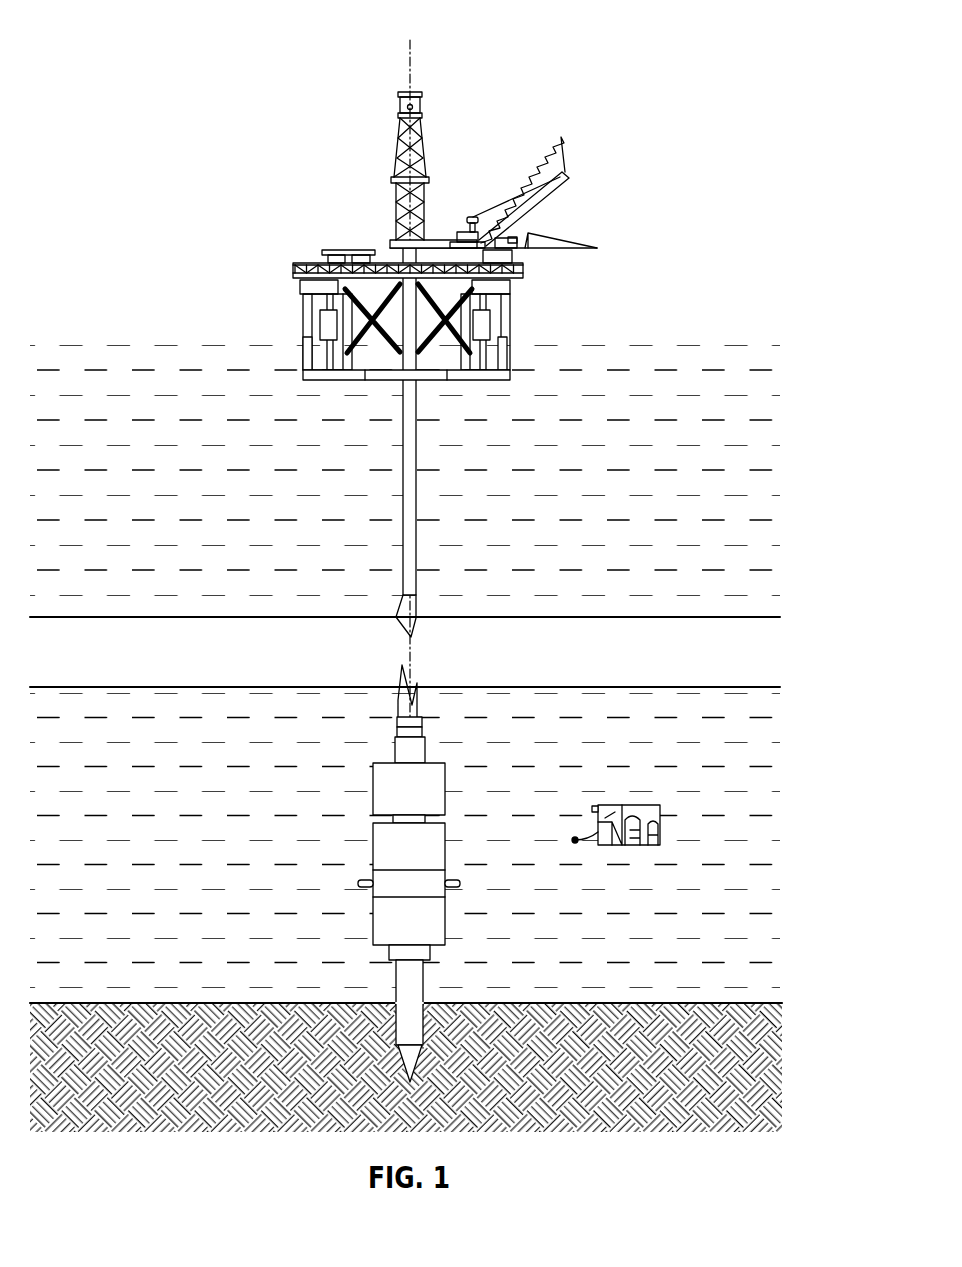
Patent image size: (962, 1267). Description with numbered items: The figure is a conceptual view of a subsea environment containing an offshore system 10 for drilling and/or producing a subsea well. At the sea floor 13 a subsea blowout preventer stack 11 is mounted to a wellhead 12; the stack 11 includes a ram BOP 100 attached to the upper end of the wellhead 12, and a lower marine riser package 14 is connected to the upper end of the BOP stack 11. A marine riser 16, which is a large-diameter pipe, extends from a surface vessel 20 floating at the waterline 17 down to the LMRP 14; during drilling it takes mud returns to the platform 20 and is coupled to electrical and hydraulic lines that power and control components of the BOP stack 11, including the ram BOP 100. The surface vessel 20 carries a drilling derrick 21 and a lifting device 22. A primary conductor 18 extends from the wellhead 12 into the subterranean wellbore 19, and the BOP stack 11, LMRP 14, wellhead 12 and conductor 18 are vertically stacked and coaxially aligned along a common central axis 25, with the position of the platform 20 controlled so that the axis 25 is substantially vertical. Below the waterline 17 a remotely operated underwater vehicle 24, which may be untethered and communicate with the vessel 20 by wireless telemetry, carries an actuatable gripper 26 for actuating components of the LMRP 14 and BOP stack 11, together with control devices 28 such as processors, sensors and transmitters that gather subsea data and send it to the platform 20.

The offshore system 10 is at (86, 40).
The subsea blowout preventer stack 11 is at (419, 881).
The wellhead 12 is at (430, 953).
The sea floor 13 is at (700, 1003).
The lower marine riser package 14 is at (445, 787).
The marine riser 16 is at (417, 467).
The waterline 17 is at (641, 347).
The primary conductor 18 is at (408, 988).
The subterranean wellbore 19 is at (400, 1025).
The surface vessel 20 is at (305, 263).
The drilling derrick 21 is at (420, 135).
The lifting device 22 is at (556, 172).
The remotely operated underwater vehicle 24 is at (635, 827).
The common central axis 25 is at (413, 1055).
The gripper 26 is at (575, 843).
The control devices 28 is at (592, 808).
The ram BOP 100 is at (373, 880).